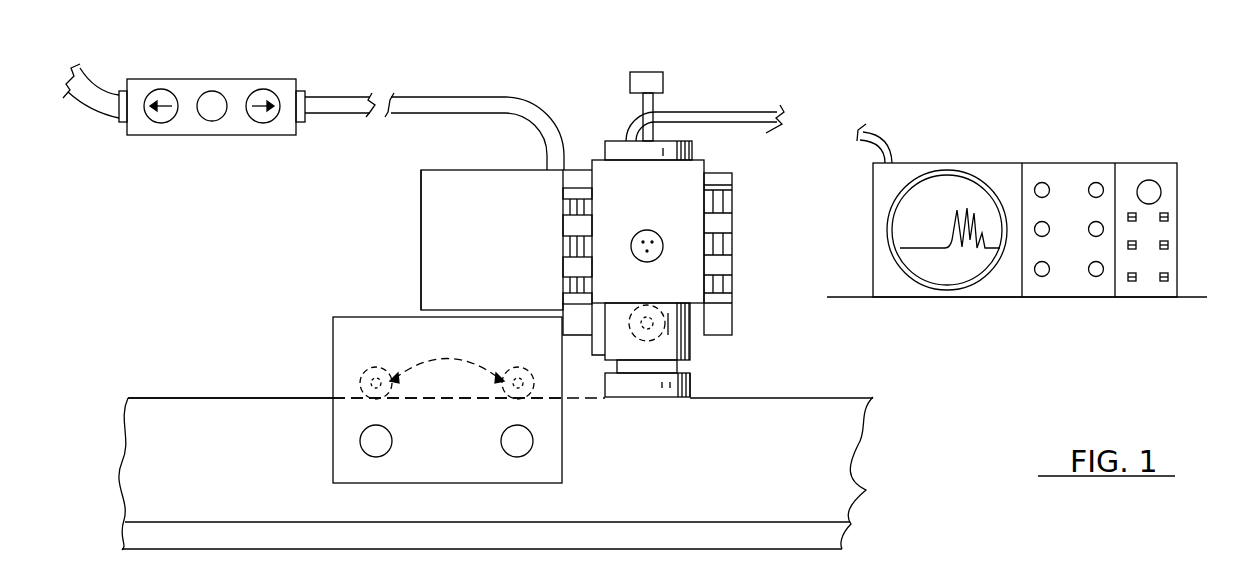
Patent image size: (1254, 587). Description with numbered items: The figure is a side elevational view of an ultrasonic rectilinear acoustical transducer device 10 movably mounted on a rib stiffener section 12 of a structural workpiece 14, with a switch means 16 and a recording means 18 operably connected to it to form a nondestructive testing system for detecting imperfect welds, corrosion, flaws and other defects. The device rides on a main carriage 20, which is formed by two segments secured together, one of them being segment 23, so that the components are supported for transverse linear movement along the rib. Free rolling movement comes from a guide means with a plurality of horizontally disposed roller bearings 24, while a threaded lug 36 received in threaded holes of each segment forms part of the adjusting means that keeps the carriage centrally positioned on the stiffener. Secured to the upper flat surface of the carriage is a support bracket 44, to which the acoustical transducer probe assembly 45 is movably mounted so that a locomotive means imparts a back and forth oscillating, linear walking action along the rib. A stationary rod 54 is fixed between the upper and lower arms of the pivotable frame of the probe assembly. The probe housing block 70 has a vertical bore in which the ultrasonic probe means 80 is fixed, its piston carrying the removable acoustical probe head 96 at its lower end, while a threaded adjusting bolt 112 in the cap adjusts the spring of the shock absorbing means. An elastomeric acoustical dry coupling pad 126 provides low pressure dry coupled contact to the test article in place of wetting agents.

The ultrasonic rectilinear acoustical transducer device 10 is at (429, 233).
The rib stiffener section 12 is at (206, 421).
The structural workpiece 14 is at (873, 418).
The switch means 16 is at (253, 77).
The recording means 18 is at (1163, 154).
The main carriage 20 is at (338, 352).
The segment 23 is at (345, 421).
The roller bearings 24 is at (447, 374).
The threaded lug 36 is at (507, 436).
The support bracket 44 is at (432, 188).
The acoustical transducer probe assembly 45 is at (563, 269).
The stationary rod 54 is at (576, 205).
The probe housing block 70 is at (692, 170).
The ultrasonic probe means 80 is at (692, 350).
The acoustical probe head 96 is at (694, 376).
The threaded adjusting bolt 112 is at (650, 104).
The acoustical dry coupling pad 126 is at (637, 388).